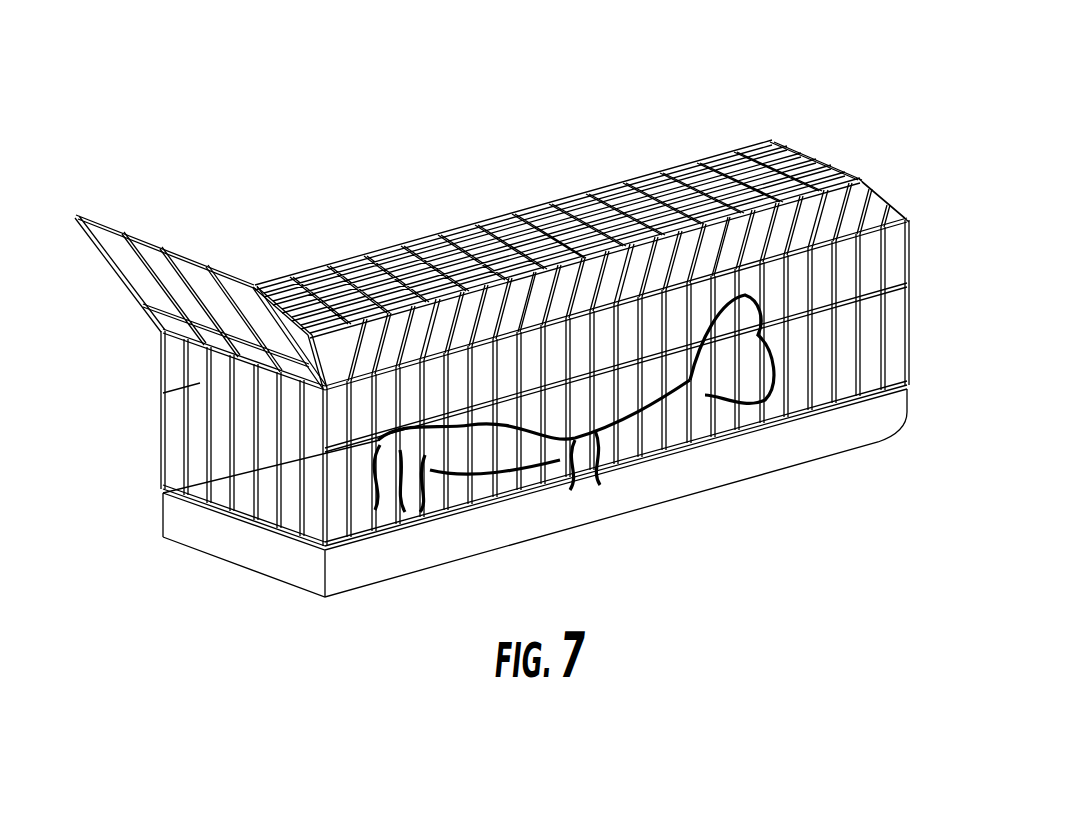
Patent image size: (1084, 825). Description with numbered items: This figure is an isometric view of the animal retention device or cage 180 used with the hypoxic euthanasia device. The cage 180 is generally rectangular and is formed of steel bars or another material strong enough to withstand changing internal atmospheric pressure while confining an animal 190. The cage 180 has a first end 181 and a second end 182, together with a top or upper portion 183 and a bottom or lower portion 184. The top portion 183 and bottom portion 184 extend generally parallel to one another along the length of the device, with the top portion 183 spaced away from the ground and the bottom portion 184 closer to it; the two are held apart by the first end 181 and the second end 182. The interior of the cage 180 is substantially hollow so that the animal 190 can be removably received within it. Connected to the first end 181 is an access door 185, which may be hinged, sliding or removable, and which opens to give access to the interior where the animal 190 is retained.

The animal retention device 180 is at (542, 102).
The first end 181 is at (250, 530).
The second end 182 is at (862, 172).
The top or upper portion 183 is at (453, 232).
The bottom or lower portion 184 is at (480, 552).
The access door 185 is at (122, 230).
The animal 190 is at (577, 430).